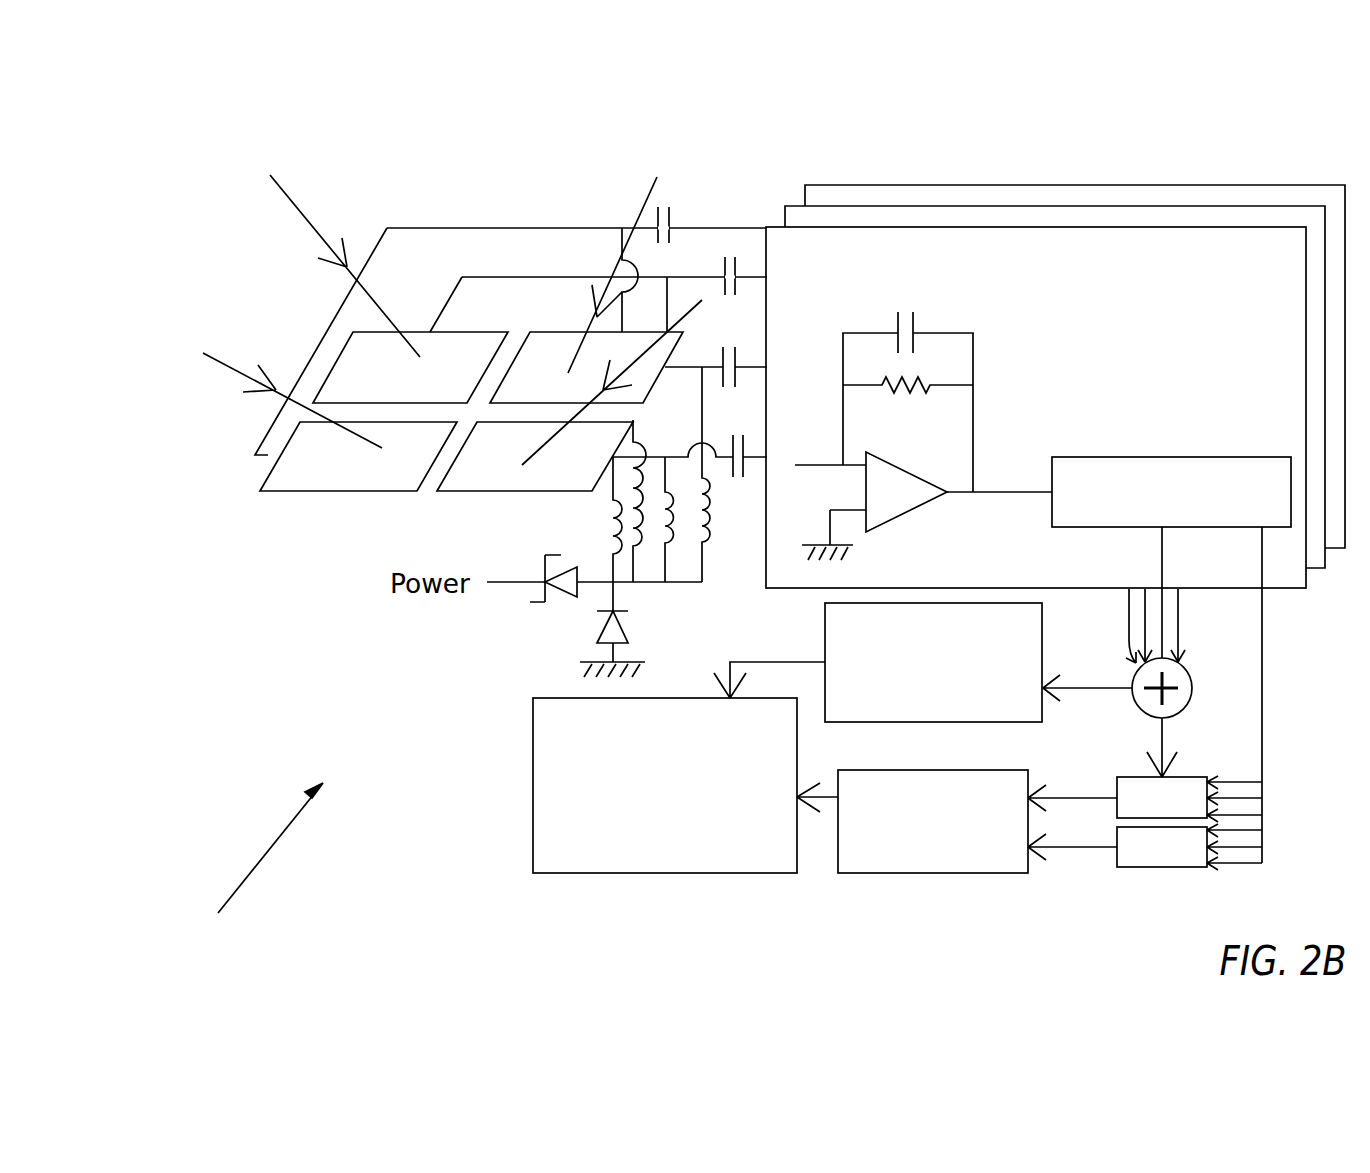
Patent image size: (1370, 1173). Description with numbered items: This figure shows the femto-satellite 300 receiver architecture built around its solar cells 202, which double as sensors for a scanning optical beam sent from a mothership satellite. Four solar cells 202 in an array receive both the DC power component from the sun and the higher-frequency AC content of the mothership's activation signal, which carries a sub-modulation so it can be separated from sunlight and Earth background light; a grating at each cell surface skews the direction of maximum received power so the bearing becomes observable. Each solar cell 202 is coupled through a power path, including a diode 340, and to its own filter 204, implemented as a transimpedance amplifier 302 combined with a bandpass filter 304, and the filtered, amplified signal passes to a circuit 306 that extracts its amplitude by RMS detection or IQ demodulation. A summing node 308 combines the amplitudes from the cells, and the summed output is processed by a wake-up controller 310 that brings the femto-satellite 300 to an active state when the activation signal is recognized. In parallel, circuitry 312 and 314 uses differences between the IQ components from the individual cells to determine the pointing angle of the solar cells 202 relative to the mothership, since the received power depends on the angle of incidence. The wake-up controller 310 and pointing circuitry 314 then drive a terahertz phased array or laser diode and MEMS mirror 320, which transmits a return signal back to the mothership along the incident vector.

The solar cells 202 is at (511, 393).
The filter 204 is at (1283, 276).
The femtosatellite 300 is at (245, 868).
The transimpedance amplifier 302 is at (929, 446).
The bandpass filter 304 is at (686, 489).
The amplitude extraction circuit 306 is at (1171, 475).
The summing node 308 is at (1117, 652).
The wake-up controller 310 is at (917, 709).
The circuitry 312 is at (1145, 714).
The circuitry 314 is at (915, 853).
The terahertz phased array or laser diode and MEMS mirror 320 is at (642, 853).
The diode 340 is at (634, 637).